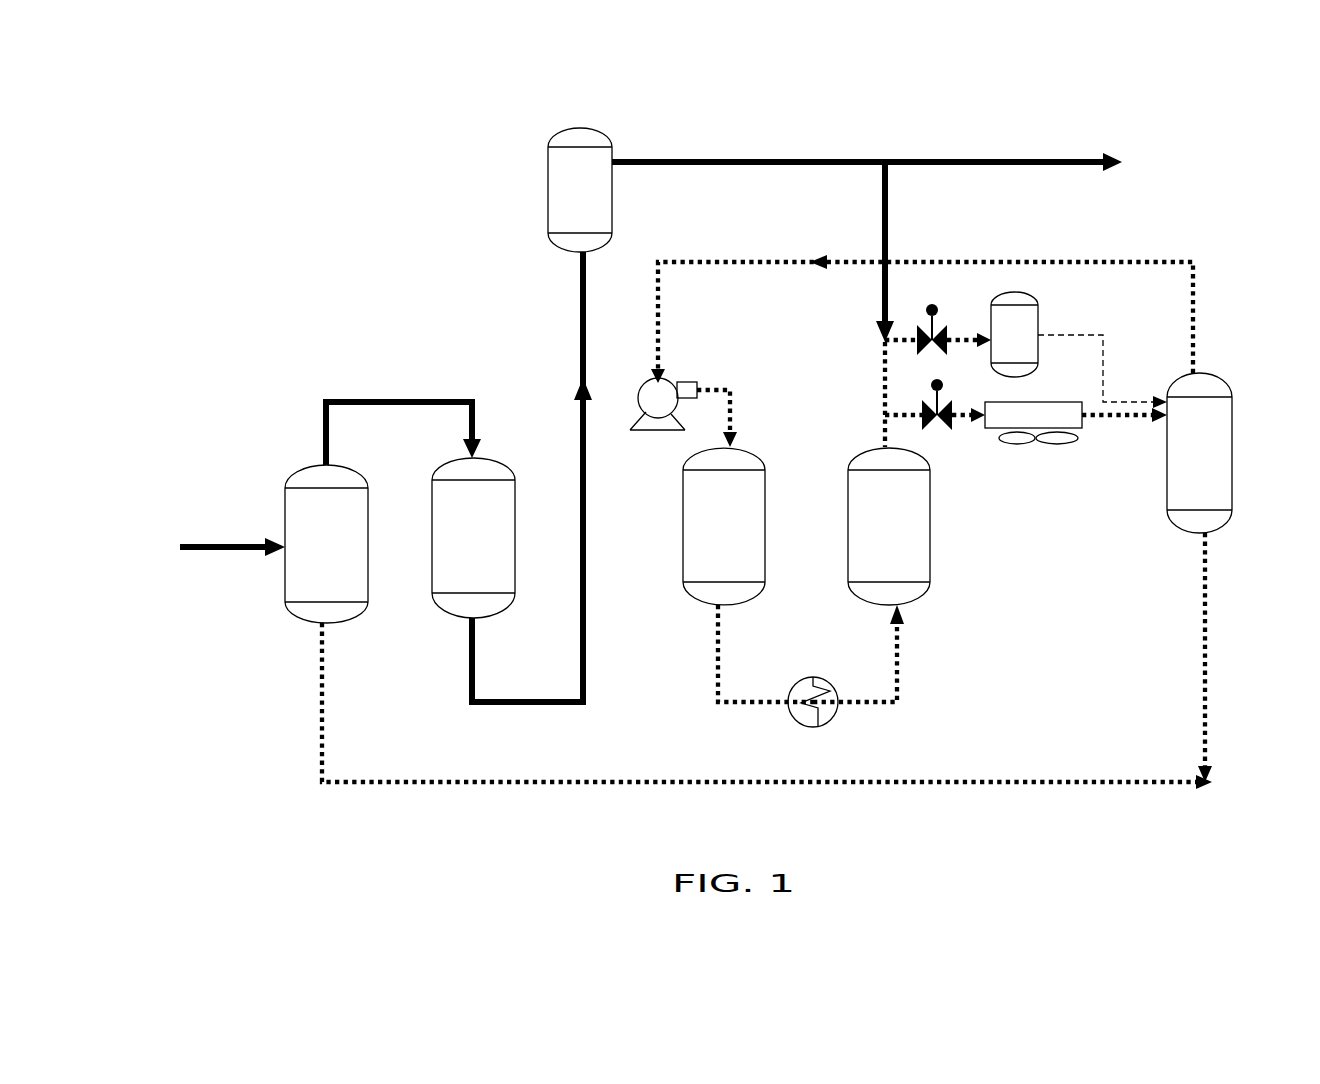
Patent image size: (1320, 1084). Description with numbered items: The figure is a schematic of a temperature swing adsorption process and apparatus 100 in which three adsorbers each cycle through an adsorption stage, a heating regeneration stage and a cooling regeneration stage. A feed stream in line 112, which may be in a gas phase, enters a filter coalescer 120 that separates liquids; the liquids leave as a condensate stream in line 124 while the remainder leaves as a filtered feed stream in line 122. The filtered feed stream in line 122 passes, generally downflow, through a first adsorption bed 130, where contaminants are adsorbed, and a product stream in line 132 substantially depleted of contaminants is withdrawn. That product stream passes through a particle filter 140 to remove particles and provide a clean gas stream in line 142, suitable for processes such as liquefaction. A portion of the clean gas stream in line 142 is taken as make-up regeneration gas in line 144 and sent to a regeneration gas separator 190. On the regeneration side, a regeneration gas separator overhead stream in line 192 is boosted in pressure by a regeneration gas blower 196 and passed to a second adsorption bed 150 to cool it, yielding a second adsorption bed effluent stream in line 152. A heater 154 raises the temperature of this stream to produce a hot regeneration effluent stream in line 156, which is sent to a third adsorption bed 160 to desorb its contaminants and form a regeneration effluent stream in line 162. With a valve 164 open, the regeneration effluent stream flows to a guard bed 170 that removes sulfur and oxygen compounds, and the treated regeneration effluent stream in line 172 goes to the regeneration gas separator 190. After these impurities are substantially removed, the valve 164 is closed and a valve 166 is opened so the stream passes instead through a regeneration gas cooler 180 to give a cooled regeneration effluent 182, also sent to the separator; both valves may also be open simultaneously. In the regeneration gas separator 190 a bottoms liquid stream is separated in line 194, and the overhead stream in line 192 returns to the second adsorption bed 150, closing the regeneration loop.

The process and apparatus 100 is at (258, 124).
The feed stream line 112 is at (248, 553).
The filter coalescer 120 is at (349, 561).
The filtered feed stream line 122 is at (377, 398).
The condensate stream line 124 is at (320, 682).
The first adsorption bed 130 is at (496, 553).
The product stream line 132 is at (483, 705).
The particle filter 140 is at (603, 202).
The clean gas stream line 142 is at (725, 158).
The make-up regeneration gas line 144 is at (887, 233).
The second adsorption bed 150 is at (747, 546).
The second adsorption bed effluent stream line 152 is at (718, 653).
The heater 154 is at (820, 727).
The hot regeneration effluent stream line 156 is at (898, 647).
The third adsorption bed 160 is at (912, 546).
The regeneration effluent stream line 162 is at (882, 427).
The valve 164 is at (932, 317).
The valve 166 is at (938, 423).
The guard bed 170 is at (1038, 346).
The treated regeneration effluent stream line 172 is at (1105, 365).
The regeneration gas cooler 180 is at (1038, 448).
The cooled regeneration effluent 182 is at (1130, 423).
The regeneration gas separator 190 is at (1222, 470).
The regeneration gas separator overhead stream line 192 is at (1115, 262).
The bottoms liquid stream line 194 is at (1205, 607).
The regeneration gas blower 196 is at (690, 372).